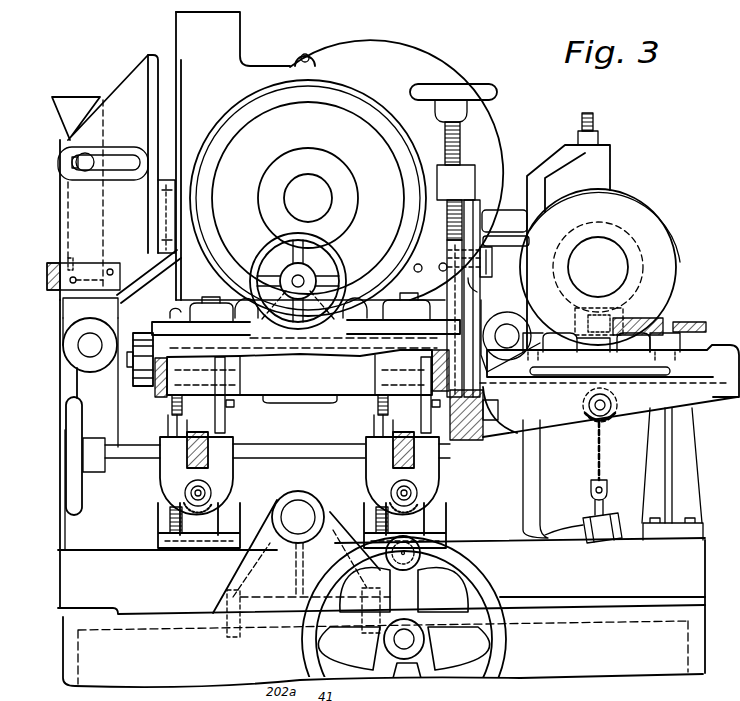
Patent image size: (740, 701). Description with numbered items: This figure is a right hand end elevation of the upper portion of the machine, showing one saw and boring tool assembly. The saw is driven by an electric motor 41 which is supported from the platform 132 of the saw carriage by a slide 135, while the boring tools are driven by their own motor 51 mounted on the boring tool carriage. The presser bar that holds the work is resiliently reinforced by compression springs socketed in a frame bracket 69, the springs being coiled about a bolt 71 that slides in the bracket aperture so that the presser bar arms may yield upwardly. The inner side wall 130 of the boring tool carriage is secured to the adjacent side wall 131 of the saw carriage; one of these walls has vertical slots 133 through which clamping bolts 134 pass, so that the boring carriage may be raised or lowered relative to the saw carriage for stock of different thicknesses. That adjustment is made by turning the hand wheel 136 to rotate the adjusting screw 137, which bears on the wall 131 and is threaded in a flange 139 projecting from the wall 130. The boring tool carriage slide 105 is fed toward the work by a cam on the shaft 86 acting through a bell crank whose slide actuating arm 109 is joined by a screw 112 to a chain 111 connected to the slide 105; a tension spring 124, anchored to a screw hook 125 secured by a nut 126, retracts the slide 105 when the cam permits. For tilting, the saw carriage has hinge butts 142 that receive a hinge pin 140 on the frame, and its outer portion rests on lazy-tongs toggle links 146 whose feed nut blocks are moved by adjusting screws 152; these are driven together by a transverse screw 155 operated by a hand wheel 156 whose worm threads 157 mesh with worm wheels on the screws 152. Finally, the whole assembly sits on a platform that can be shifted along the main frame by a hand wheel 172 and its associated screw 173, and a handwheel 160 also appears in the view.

The electric motor 41 is at (308, 198).
The motor 51 is at (613, 275).
The frame bracket 69 is at (607, 170).
The bolt 71 is at (597, 126).
The shaft 86 is at (298, 517).
The boring tool carriage slide 105 is at (609, 371).
The slide actuating arm 109 is at (605, 538).
The chain 111 is at (601, 464).
The screw 112 is at (607, 501).
The tension spring 124 is at (610, 418).
The screw hook 125 is at (608, 398).
The nut 126 is at (613, 408).
The inner side wall 130 is at (472, 210).
The side wall 131 is at (448, 281).
The platform 132 is at (178, 322).
The vertical slot 133 is at (480, 294).
The clamping bolt 134 is at (490, 265).
The slide 135 is at (365, 327).
The hand wheel 136 is at (470, 88).
The adjusting screw 137 is at (462, 165).
The flange 139 is at (456, 182).
The hinge pin 140 is at (130, 368).
The hinge butt 142 is at (142, 392).
The toggle link 146 is at (216, 413).
The adjusting screw 152 is at (214, 498).
The transverse screw 155 is at (125, 458).
The hand wheel 156 is at (72, 483).
The worm thread 157 is at (207, 462).
The handwheel 160 is at (334, 260).
The hand wheel 172 is at (481, 584).
The screw 173 is at (420, 645).